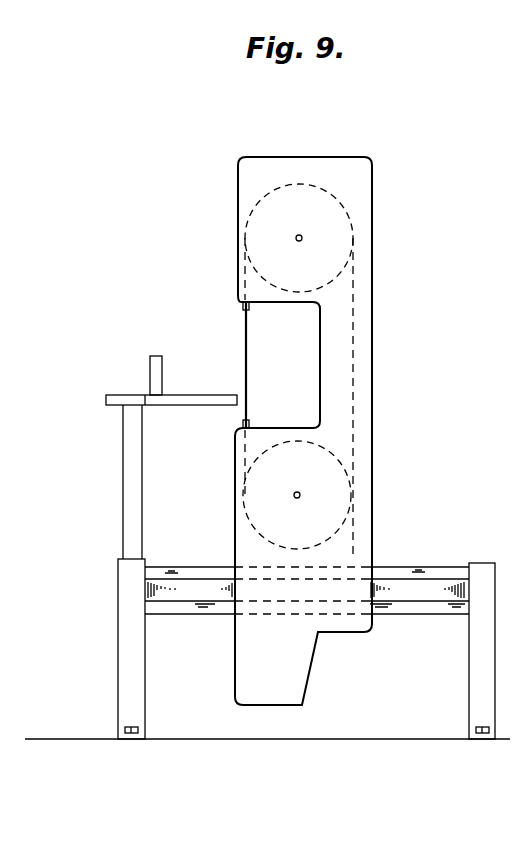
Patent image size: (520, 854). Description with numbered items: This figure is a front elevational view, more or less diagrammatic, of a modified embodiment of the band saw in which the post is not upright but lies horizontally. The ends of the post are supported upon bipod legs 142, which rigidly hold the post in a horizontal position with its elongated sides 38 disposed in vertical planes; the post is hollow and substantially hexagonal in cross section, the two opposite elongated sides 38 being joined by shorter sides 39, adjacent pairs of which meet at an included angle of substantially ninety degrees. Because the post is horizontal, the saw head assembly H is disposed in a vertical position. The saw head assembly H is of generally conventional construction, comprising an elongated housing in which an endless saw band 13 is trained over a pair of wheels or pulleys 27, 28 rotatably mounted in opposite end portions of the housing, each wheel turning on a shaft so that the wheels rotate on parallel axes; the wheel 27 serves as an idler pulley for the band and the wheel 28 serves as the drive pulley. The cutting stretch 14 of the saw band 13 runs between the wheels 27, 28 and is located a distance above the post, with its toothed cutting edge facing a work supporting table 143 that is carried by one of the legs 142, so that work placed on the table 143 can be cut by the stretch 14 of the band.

The saw head assembly H is at (365, 423).
The wheel 27 is at (353, 232).
The wheel 28 is at (352, 497).
The endless saw band 13 is at (353, 361).
The cutting stretch 14 is at (247, 353).
The work supporting table 143 is at (192, 397).
The bipod legs 142 is at (127, 653).
The elongated sides 38 is at (427, 590).
The shorter sides 39 is at (397, 573).